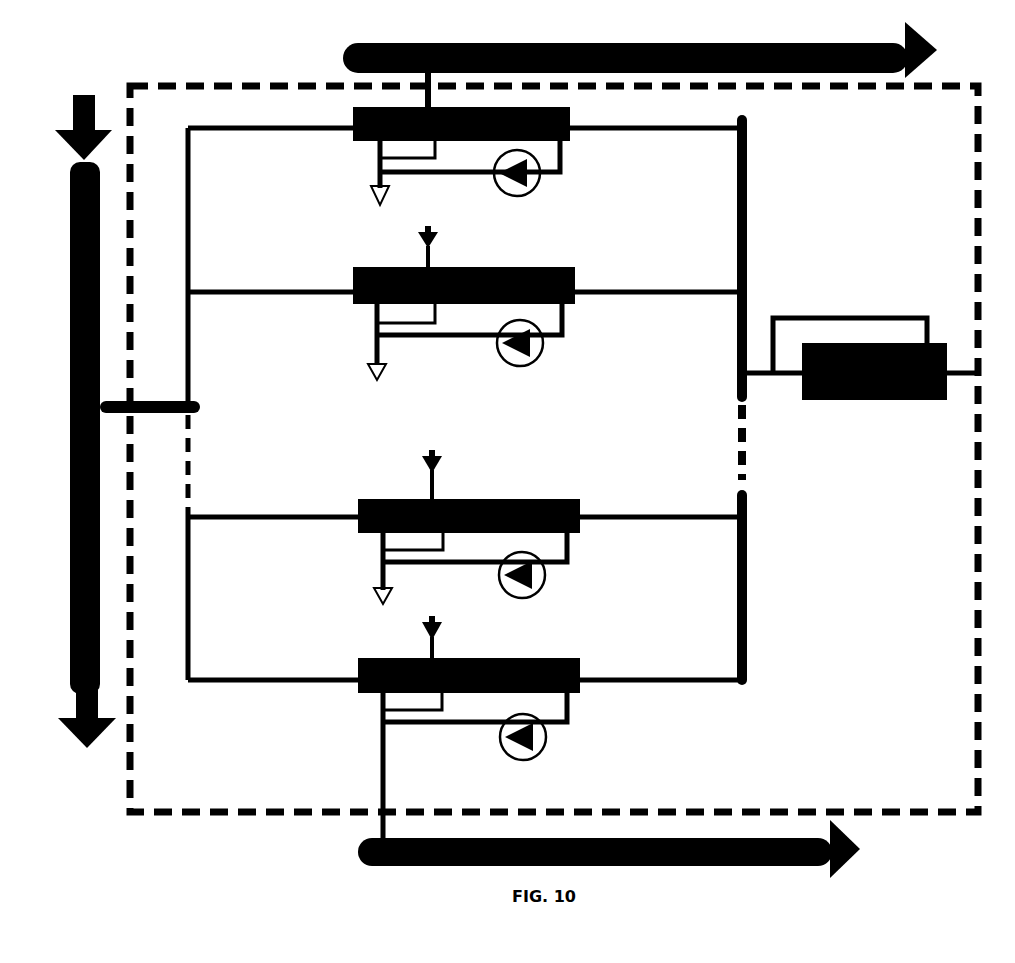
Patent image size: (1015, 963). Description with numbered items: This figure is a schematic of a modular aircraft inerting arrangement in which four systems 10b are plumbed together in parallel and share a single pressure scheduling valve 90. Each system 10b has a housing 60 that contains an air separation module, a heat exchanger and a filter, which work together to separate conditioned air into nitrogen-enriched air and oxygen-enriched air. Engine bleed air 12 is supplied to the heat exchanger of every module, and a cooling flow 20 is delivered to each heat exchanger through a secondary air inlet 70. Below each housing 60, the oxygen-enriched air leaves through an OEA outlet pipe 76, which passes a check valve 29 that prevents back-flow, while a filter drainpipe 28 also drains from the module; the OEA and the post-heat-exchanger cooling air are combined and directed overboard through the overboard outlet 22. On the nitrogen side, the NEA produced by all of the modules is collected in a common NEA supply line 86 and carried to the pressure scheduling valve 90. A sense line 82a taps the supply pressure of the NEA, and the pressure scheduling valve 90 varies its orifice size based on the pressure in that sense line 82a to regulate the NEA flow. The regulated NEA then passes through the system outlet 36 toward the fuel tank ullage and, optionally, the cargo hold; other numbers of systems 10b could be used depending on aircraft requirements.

The system 10b is at (617, 181).
The engine bleed air 12 is at (138, 392).
The cooling flow 20 is at (338, 54).
The overboard outlet 22 is at (370, 182).
The filter drainpipe 28 is at (442, 152).
The check valve 29 is at (542, 182).
The system outlet 36 is at (968, 362).
The housing 60 is at (574, 114).
The secondary air inlet 70 is at (430, 84).
The OEA outlet pipe 76 is at (402, 176).
The sense line 82a is at (845, 314).
The NEA supply line 86 is at (750, 248).
The pressure scheduling valve 90 is at (862, 404).